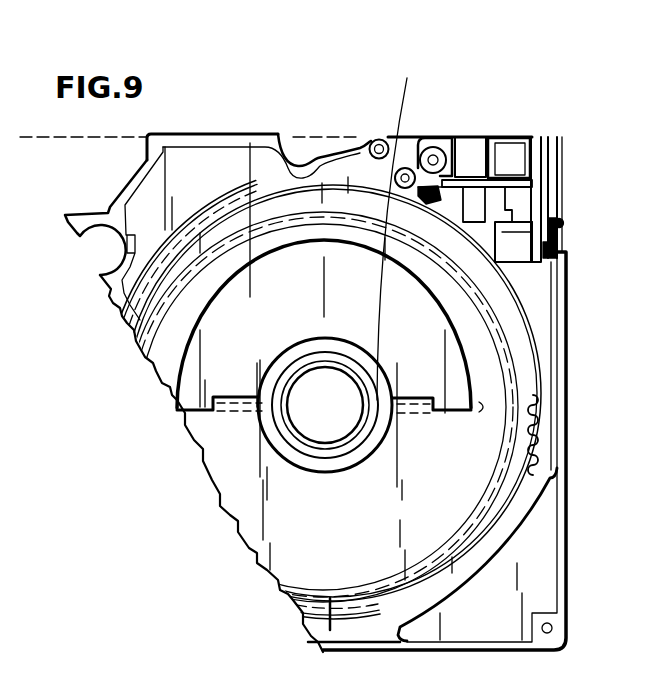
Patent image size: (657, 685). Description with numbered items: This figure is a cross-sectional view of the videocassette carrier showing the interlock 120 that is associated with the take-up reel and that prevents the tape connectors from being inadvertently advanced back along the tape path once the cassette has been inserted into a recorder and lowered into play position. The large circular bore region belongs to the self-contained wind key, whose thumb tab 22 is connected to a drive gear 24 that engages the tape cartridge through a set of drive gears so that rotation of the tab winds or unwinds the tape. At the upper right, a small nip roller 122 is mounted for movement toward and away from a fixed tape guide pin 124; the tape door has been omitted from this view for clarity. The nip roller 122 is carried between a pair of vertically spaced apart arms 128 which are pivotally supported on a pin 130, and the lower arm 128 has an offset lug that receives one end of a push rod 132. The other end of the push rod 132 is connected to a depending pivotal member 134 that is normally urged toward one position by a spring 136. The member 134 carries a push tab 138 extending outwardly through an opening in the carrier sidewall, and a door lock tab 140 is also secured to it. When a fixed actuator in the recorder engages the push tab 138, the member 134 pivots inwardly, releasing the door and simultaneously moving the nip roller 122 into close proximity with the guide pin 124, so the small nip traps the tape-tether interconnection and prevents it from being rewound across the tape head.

The thumb tab 22 is at (268, 331).
The drive gear 24 is at (528, 431).
The interlock 120 is at (488, 207).
The nip roller 122 is at (400, 150).
The tape guide pin 124 is at (383, 130).
The arms 128 is at (423, 138).
The pin 130 is at (470, 129).
The push rod 132 is at (485, 190).
The depending pivotal member 134 is at (533, 137).
The spring 136 is at (503, 143).
The push tab 138 is at (563, 226).
The door lock tab 140 is at (558, 193).